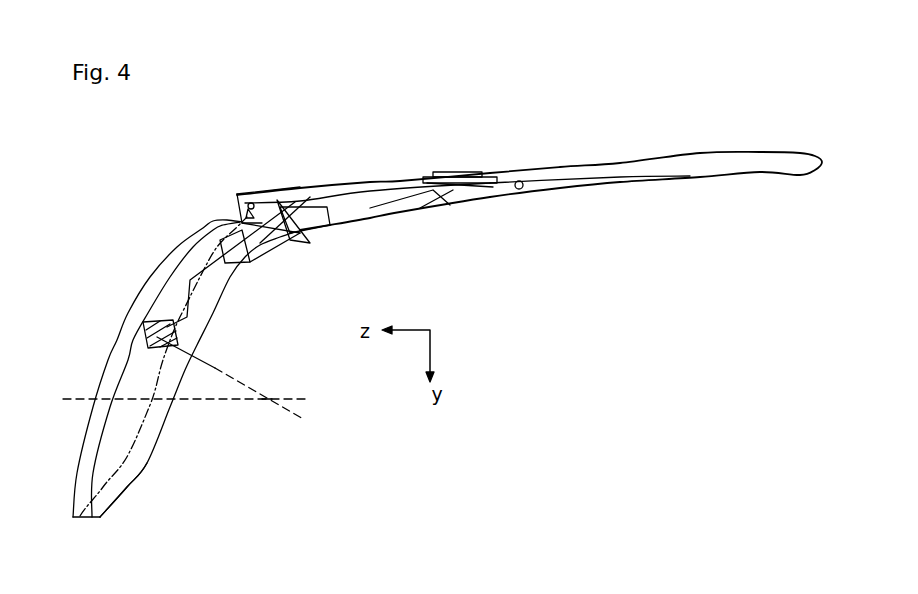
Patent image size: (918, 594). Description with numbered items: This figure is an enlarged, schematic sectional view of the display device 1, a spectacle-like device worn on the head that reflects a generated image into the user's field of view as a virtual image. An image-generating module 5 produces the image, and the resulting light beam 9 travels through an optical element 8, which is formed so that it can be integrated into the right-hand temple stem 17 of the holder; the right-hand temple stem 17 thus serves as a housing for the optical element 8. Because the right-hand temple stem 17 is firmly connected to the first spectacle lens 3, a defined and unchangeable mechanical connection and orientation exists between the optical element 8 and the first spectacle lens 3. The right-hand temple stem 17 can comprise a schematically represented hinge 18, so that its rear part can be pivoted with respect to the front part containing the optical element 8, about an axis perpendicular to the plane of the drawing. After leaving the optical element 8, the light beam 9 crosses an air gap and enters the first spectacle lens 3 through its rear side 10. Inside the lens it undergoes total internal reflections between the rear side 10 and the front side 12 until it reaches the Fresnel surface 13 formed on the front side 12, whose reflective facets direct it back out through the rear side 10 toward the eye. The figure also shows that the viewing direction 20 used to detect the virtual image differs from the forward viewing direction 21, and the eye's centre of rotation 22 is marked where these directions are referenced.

The display device 1 is at (235, 186).
The first spectacle lens 3 is at (157, 285).
The image-generating module 5 is at (455, 172).
The optical element 8 is at (345, 198).
The light beam 9 is at (328, 232).
The rear side 10 is at (143, 462).
The front side 12 is at (178, 248).
The Fresnel surface 13 is at (157, 337).
The right-hand temple stem 17 is at (655, 182).
The hinge 18 is at (519, 190).
The viewing direction 20 is at (236, 380).
The forward viewing direction 21 is at (200, 402).
The eye's centre of rotation 22 is at (266, 402).